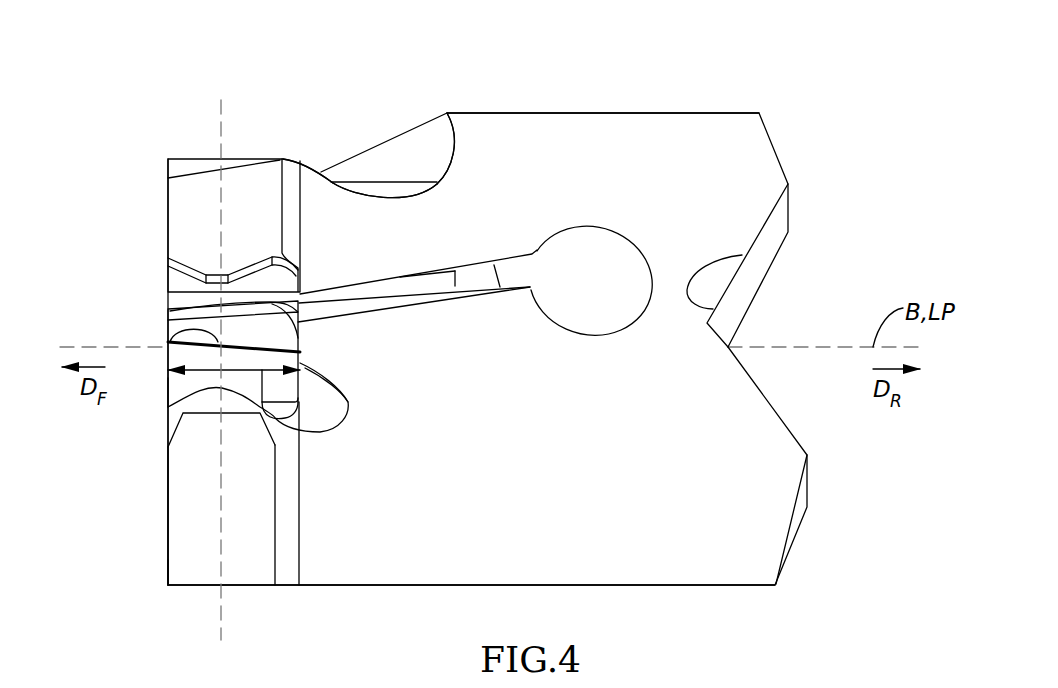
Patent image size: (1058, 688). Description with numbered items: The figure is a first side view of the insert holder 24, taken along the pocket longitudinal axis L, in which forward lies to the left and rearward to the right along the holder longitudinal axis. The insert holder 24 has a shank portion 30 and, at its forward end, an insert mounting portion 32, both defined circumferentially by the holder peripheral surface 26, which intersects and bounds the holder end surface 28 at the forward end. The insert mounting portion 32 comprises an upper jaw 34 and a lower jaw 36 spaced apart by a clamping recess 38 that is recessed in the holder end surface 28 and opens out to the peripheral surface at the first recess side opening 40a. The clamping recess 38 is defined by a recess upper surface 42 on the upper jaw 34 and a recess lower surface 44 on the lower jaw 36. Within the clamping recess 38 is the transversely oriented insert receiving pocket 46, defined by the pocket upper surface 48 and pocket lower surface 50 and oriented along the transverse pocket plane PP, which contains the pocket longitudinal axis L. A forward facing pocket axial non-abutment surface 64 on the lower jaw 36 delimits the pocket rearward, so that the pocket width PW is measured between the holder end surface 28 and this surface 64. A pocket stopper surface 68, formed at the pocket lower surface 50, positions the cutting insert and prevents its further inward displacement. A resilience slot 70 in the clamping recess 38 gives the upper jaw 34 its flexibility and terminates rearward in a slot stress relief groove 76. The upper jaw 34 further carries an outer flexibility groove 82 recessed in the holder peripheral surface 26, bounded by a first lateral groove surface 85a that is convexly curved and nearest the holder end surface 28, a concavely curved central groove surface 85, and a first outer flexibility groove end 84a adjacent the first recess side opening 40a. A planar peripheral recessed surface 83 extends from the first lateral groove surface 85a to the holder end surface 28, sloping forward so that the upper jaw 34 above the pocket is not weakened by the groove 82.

The insert holder 24 is at (733, 80).
The holder peripheral surface 26 is at (546, 113).
The holder end surface 28 is at (168, 524).
The shank portion 30 is at (672, 593).
The insert mounting portion 32 is at (174, 602).
The upper jaw 34 is at (158, 231).
The lower jaw 36 is at (157, 483).
The clamping recess 38 is at (335, 303).
The first recess side opening 40a is at (378, 300).
The recess upper surface 42 is at (494, 265).
The recess lower surface 44 is at (478, 293).
The insert receiving pocket 46 is at (330, 390).
The pocket upper surface 48 is at (170, 282).
The pocket lower surface 50 is at (193, 391).
The pocket axial non-abutment surface 64 is at (172, 305).
The pocket stopper surface 68 is at (245, 337).
The resilience slot 70 is at (425, 293).
The slot stress relief groove 76 is at (603, 303).
The outer flexibility groove 82 is at (362, 142).
The peripheral recessed surface 83 is at (183, 170).
The first outer flexibility groove end 84a is at (415, 173).
The central groove surface 85 is at (404, 191).
The first lateral groove surface 85a is at (312, 166).
The transverse pocket plane PP is at (222, 115).
The pocket longitudinal axis L is at (286, 351).
The pocket width PW is at (292, 437).